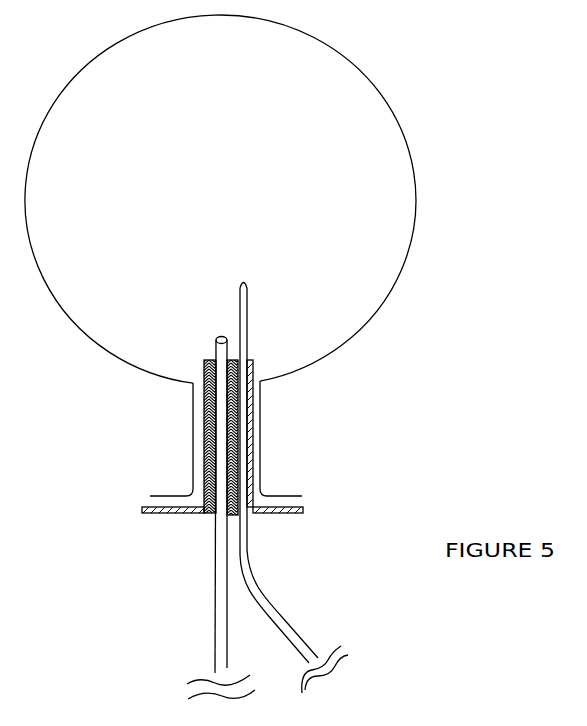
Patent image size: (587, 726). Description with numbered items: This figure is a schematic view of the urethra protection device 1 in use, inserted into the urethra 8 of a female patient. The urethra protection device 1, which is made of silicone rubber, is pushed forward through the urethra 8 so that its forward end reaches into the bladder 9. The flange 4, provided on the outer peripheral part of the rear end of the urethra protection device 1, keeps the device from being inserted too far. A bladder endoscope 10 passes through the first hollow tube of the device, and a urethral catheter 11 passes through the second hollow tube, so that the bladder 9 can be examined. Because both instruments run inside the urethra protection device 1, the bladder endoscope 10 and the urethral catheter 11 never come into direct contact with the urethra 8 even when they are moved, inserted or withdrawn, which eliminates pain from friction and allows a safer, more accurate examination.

The bladder 9 is at (413, 163).
The urethra 8 is at (261, 433).
The urethra protection device 1 is at (203, 433).
The flange 4 is at (293, 513).
The bladder endoscope 10 is at (213, 580).
The urethral catheter 11 is at (270, 607).